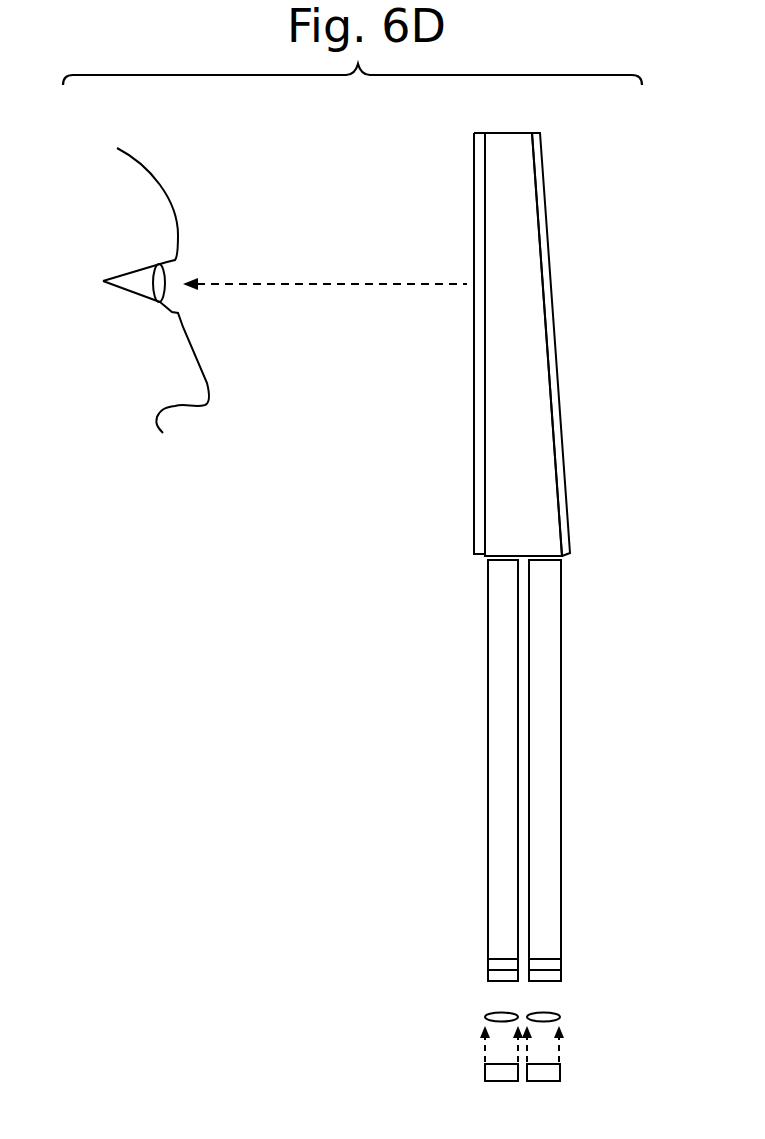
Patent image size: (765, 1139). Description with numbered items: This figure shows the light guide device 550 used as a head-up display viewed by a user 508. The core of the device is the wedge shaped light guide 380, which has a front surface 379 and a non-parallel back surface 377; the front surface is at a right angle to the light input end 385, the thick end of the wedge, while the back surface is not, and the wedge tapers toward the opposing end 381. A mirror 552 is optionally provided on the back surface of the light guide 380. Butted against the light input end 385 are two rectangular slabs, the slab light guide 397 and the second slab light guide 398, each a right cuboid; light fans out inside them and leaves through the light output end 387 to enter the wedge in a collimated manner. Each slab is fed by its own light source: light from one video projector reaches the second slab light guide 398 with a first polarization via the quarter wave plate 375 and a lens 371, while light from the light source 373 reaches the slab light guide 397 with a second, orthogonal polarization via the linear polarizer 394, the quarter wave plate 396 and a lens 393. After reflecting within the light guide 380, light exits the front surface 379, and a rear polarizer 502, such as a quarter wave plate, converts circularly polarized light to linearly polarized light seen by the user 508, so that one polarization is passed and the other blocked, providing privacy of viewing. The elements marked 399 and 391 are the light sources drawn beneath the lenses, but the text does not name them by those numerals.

The user 508 is at (145, 160).
The light guide device 550 is at (400, 448).
The wedge shaped light guide 380 is at (523, 344).
The front surface 379 is at (479, 393).
The mirror 552 is at (552, 238).
The opposing end 381 is at (513, 132).
The back surface 377 is at (545, 333).
The light input end 385 is at (549, 552).
The rear polarizer 502 is at (480, 558).
The second slab light guide 398 is at (487, 828).
The slab light guide 397 is at (562, 828).
The light output end 387 is at (545, 565).
The quarter wave plate 375 is at (487, 963).
The light source 373 is at (487, 978).
The quarter wave plate 396 is at (562, 963).
The linear polarizer 394 is at (561, 978).
The lens 371 is at (484, 1016).
The lens 393 is at (561, 1016).
The left light source 399 is at (462, 1070).
The right light source 391 is at (584, 1070).